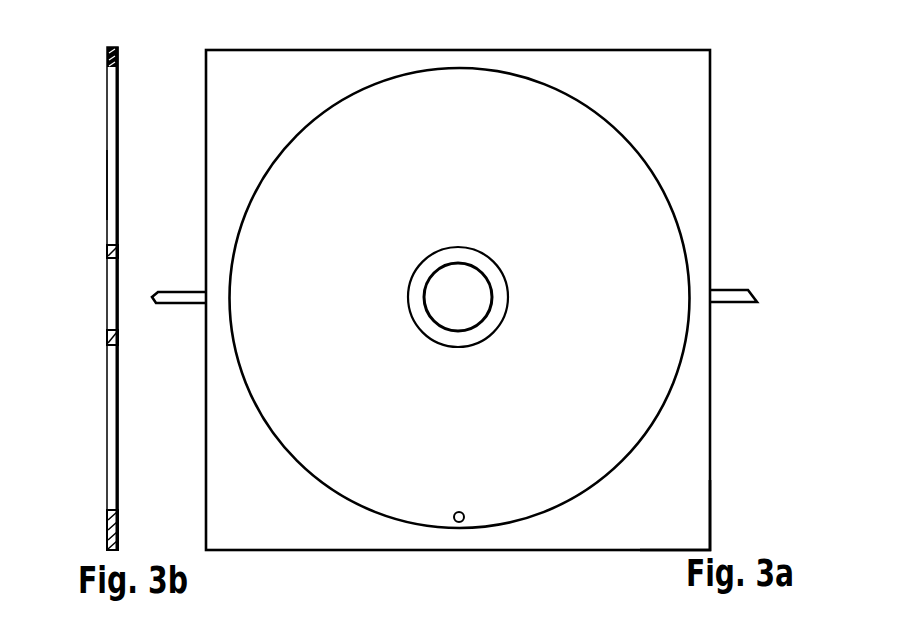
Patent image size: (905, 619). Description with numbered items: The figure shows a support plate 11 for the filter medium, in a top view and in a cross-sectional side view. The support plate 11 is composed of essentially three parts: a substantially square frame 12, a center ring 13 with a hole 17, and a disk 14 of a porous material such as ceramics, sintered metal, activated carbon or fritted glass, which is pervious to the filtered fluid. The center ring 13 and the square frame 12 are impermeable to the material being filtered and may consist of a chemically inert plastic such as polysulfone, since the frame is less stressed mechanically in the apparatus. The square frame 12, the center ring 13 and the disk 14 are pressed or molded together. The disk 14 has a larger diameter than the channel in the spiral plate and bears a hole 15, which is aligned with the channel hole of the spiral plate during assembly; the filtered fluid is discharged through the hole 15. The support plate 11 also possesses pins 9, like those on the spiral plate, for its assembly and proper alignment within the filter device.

In FIG. 3a, the pins 9 is at (176, 296).
In FIG. 3a, the support plate 11 is at (588, 49).
In FIG. 3b, the support plate 11 is at (108, 57).
In FIG. 3a, the square frame 12 is at (690, 526).
In FIG. 3a, the center ring 13 is at (415, 290).
In FIG. 3b, the center ring 13 is at (118, 252).
In FIG. 3a, the disk 14 is at (295, 213).
In FIG. 3b, the disk 14 is at (115, 185).
In FIG. 3a, the hole 15 is at (454, 520).
In FIG. 3b, the hole 15 is at (107, 518).
In FIG. 3a, the hole 17 is at (457, 298).
In FIG. 3b, the hole 17 is at (115, 300).